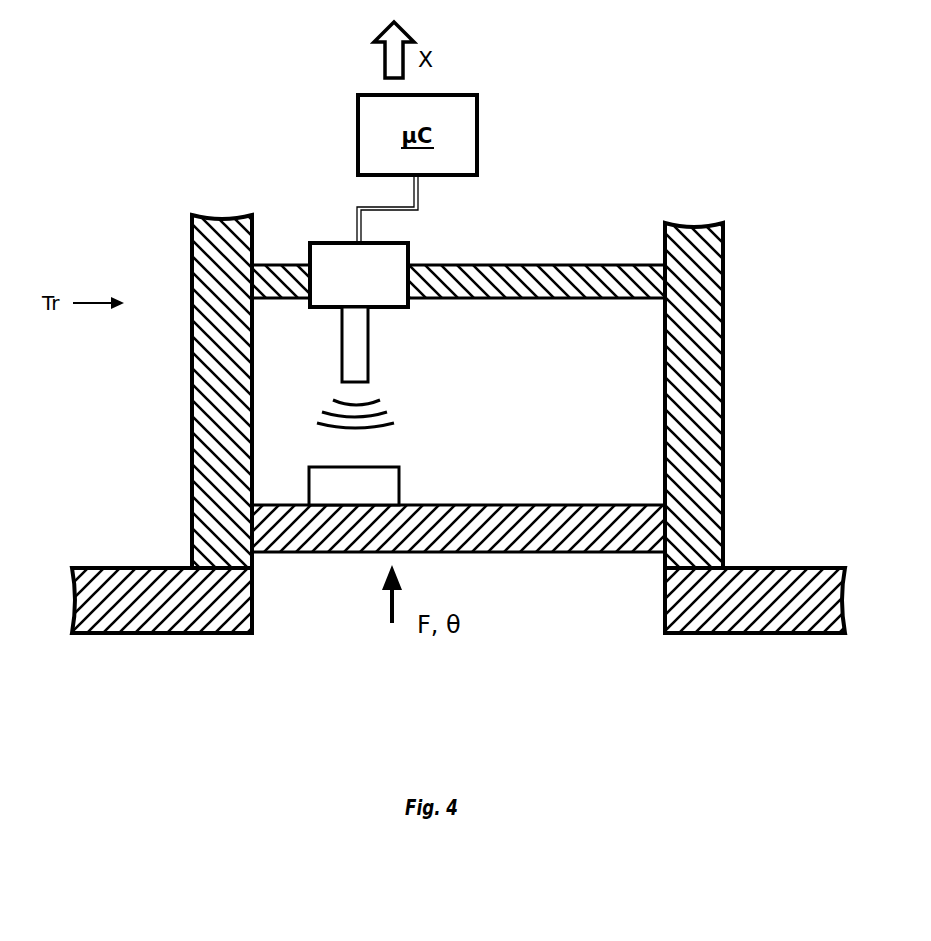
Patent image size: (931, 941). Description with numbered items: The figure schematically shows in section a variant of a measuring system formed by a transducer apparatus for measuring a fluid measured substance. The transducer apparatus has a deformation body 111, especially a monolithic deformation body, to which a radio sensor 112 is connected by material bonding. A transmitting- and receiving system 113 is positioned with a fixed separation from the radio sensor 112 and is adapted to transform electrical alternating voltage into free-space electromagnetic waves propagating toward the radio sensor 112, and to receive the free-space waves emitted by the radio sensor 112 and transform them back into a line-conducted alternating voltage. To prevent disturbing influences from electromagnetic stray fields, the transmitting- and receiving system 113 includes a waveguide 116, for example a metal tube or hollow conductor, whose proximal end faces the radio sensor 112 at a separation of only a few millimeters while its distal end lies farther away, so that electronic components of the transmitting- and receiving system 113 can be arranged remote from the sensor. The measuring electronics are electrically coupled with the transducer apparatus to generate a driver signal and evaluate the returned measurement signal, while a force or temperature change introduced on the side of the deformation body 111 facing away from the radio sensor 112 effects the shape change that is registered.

The deformation body 111 is at (470, 545).
The radio sensor 112 is at (333, 498).
The transmitting- and receiving system 113 is at (381, 290).
The waveguide 116 is at (355, 344).